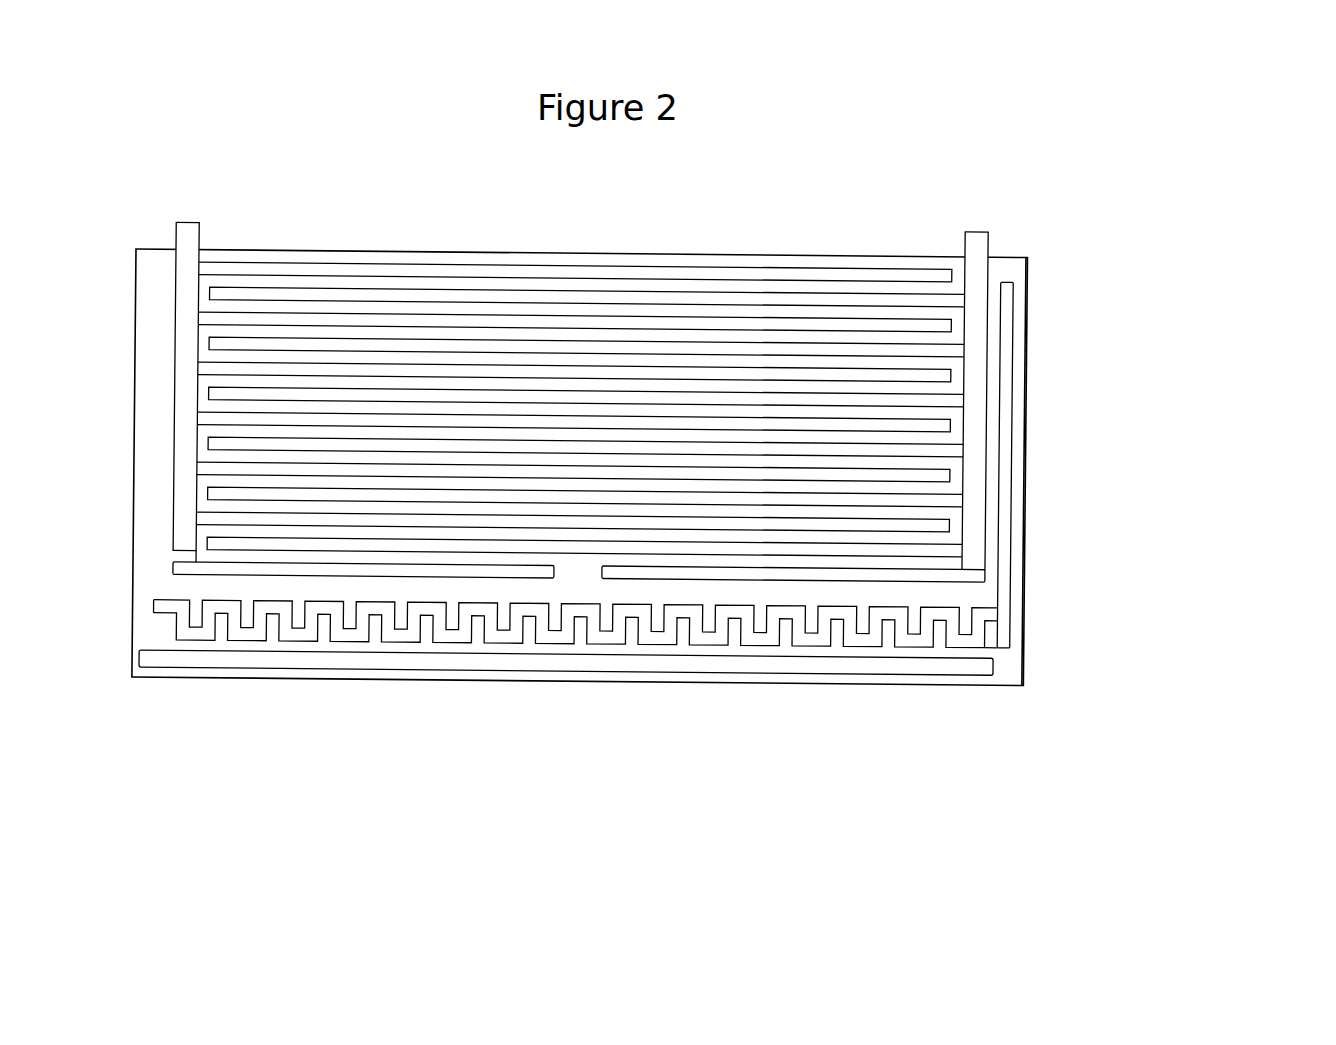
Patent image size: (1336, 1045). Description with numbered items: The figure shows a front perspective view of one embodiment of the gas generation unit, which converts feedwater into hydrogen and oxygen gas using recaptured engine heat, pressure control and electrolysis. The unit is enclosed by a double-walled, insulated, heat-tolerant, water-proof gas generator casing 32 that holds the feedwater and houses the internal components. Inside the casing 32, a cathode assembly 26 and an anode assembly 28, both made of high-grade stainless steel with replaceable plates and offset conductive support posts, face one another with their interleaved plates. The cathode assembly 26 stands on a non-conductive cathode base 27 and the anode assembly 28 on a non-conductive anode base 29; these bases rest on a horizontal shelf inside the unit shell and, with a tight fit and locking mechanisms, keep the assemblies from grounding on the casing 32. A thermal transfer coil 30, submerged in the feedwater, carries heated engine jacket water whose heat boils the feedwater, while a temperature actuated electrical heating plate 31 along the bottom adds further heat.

The cathode assembly 26 is at (562, 377).
The non-conductive cathode base 27 is at (288, 649).
The anode assembly 28 is at (597, 378).
The non-conductive anode base 29 is at (925, 659).
The thermal transfer coil 30 is at (1157, 463).
The temperature actuated electrical heating plate 31 is at (568, 669).
The gas generator casing 32 is at (727, 467).